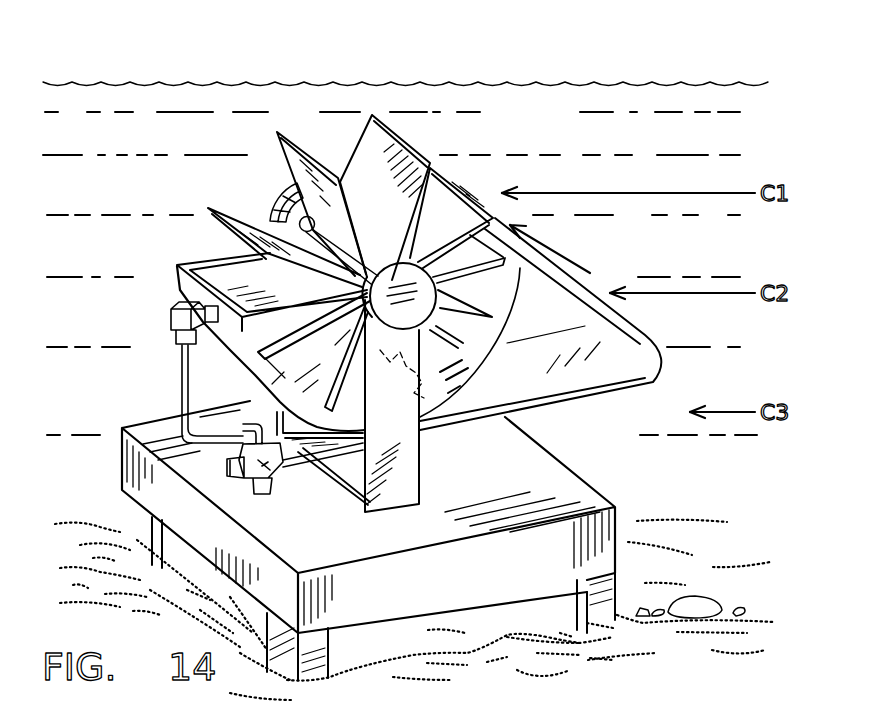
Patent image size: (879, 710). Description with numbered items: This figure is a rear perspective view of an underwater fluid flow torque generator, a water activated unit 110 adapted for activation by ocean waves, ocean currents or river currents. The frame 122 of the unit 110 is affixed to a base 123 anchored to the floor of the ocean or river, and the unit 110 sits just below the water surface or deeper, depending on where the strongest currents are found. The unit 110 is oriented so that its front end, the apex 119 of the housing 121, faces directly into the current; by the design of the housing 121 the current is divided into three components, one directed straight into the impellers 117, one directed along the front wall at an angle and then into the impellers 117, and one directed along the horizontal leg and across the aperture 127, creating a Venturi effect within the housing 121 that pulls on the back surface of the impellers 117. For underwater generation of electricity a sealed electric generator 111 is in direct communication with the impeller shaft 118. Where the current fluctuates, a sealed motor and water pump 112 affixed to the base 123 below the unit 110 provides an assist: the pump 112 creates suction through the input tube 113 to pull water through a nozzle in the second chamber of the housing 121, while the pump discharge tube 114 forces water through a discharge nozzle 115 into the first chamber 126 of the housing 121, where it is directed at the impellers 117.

The water activated unit 110 is at (311, 117).
The sealed electric generator 111 is at (378, 336).
The sealed motor and water pump 112 is at (265, 480).
The input tube 113 is at (302, 462).
The pump discharge tube 114 is at (178, 378).
The discharge nozzle 115 is at (170, 322).
The impellers 117 is at (400, 218).
The impeller shaft 118 is at (292, 190).
The apex 119 is at (658, 364).
The housing 121 is at (572, 404).
The frame 122 is at (420, 457).
The base 123 is at (478, 581).
The first chamber 126 is at (225, 333).
The aperture 127 is at (432, 406).